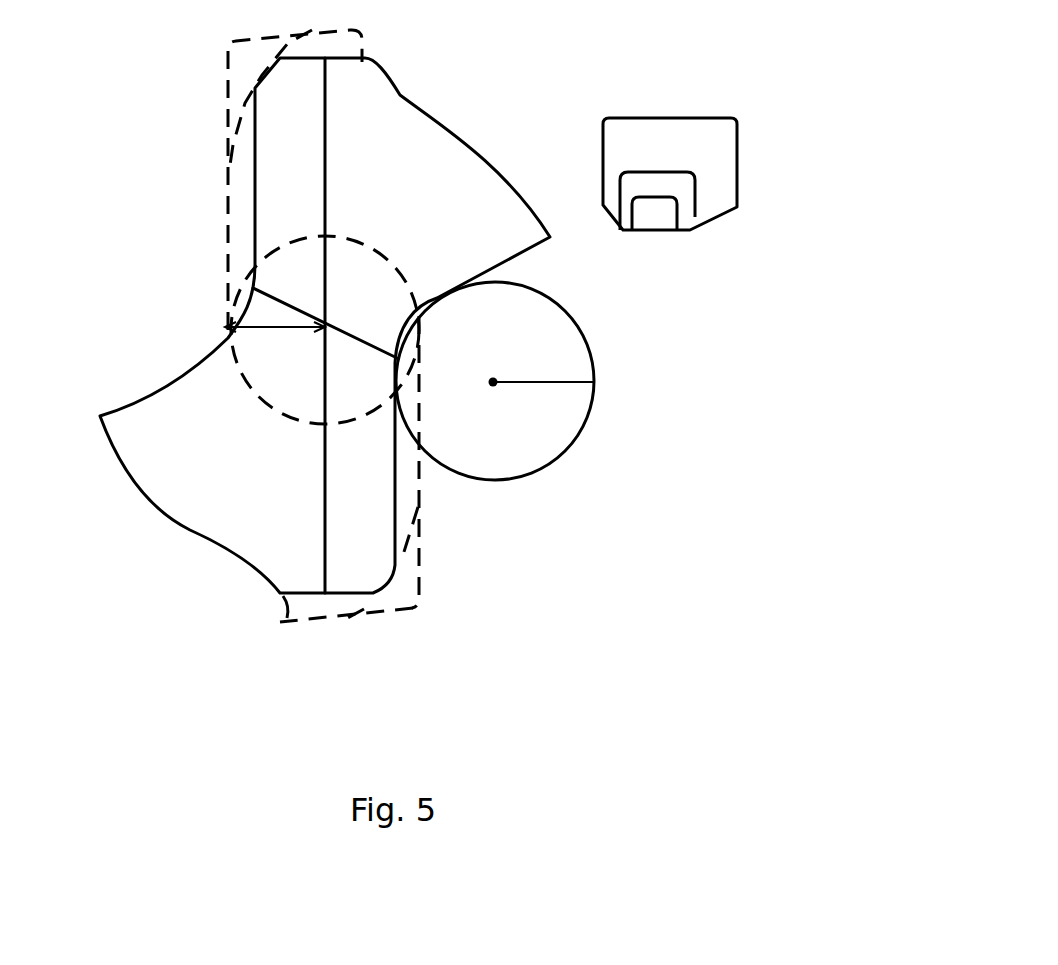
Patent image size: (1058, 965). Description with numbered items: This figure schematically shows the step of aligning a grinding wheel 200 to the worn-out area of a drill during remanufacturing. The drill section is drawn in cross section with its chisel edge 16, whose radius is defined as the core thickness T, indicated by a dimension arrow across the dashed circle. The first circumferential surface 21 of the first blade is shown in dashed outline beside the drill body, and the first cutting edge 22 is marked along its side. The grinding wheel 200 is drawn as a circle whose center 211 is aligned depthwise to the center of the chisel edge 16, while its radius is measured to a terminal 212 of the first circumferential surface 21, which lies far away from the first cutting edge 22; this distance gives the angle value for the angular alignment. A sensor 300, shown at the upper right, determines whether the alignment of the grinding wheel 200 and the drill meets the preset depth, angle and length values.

The chisel edge 16 is at (243, 383).
The first circumferential surface 21 is at (357, 646).
The first cutting edge 22 is at (421, 493).
The grinding wheel 200 is at (577, 440).
The center of grinding wheel 211 is at (497, 372).
The terminal of the first circumferential surface 212 is at (277, 620).
The sensor 300 is at (737, 168).
The core thickness T is at (277, 320).